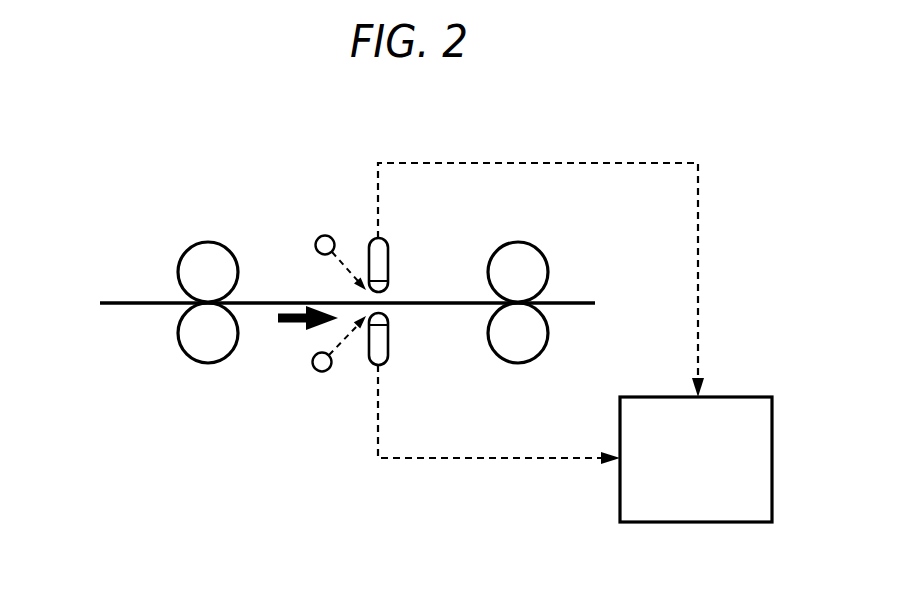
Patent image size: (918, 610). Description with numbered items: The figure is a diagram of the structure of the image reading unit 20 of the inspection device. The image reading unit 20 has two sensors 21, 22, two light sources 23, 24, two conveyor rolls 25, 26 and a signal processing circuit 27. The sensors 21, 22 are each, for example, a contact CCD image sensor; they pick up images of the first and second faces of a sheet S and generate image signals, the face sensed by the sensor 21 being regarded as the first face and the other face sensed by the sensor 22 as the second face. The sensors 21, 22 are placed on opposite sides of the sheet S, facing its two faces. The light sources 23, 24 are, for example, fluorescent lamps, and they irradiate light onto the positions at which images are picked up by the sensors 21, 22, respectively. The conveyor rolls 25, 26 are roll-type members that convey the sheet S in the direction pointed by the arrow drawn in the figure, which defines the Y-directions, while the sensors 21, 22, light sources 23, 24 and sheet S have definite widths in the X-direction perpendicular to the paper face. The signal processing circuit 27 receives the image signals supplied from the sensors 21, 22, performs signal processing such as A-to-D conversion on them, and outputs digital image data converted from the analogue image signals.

The sheet S is at (136, 305).
The image reading unit 20 is at (230, 430).
The sensor 21 is at (388, 241).
The sensor 22 is at (388, 363).
The light source 23 is at (320, 237).
The light source 24 is at (320, 372).
The conveyor roll 25 is at (209, 247).
The conveyor roll 26 is at (536, 248).
The signal processing circuit 27 is at (745, 397).